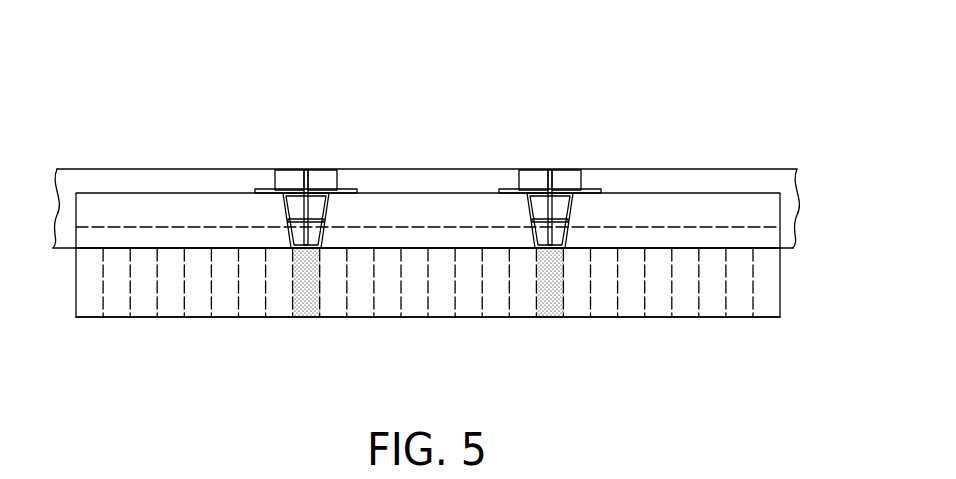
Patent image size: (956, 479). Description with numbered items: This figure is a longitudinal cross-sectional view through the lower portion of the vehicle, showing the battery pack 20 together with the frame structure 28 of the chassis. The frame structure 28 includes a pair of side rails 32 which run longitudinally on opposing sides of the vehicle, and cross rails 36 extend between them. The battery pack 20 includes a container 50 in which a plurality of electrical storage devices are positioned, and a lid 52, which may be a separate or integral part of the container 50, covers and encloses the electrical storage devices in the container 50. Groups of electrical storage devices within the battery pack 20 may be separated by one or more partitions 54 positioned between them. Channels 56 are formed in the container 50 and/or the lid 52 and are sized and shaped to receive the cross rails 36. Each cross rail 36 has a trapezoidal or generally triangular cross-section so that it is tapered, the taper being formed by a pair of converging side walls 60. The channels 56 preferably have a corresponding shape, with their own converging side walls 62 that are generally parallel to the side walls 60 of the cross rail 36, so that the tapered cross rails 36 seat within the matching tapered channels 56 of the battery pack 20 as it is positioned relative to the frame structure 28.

The battery pack 20 is at (642, 320).
The frame structure 28 is at (142, 158).
The side rails 32 is at (675, 182).
The cross rails 36 is at (314, 205).
The container 50 is at (763, 285).
The lid 52 is at (76, 213).
The partitions 54 is at (308, 295).
The channels 56 is at (300, 208).
The converging side walls 60 is at (293, 243).
The converging side walls 62 is at (290, 241).